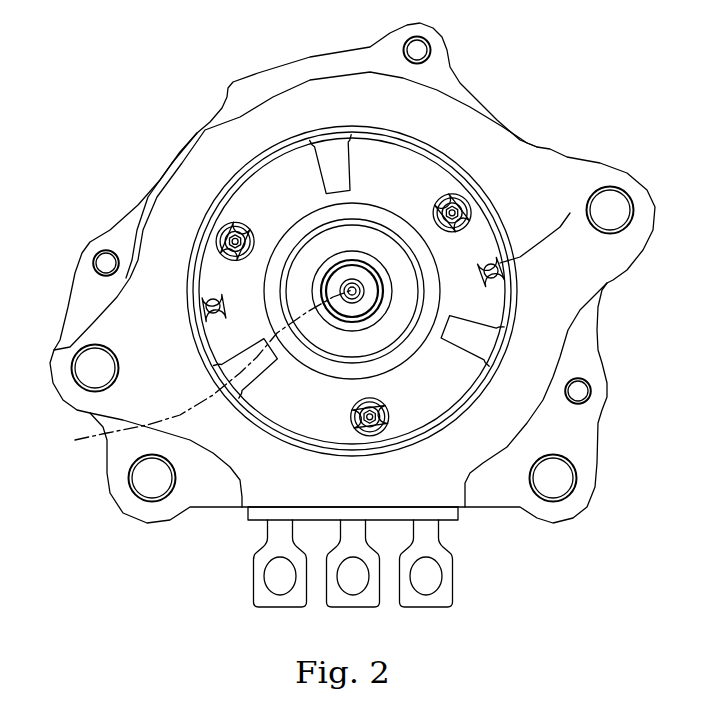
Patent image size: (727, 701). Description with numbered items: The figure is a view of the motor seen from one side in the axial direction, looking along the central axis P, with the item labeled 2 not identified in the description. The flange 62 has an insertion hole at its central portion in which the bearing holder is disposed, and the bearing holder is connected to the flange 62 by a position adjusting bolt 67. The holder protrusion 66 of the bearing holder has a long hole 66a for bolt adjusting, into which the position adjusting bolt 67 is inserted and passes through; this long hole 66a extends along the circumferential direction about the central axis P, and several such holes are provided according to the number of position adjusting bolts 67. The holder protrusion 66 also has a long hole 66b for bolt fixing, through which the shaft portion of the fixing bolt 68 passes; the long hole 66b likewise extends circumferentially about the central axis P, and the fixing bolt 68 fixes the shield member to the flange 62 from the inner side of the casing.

The motor 2 is at (346, 315).
The flange 62 is at (352, 315).
The holder protrusion 66 is at (322, 283).
The long hole for bolt adjusting 66a is at (370, 230).
The long hole for bolt fixing 66b is at (256, 289).
The position adjusting bolt 67 is at (279, 298).
The fixing bolt 68 is at (586, 194).
The central axis P is at (205, 372).